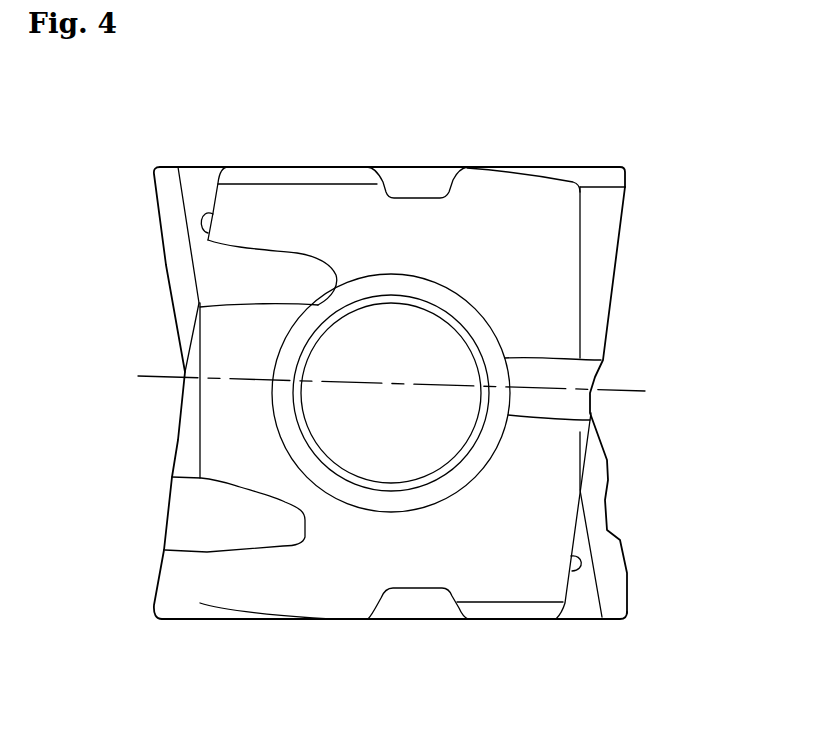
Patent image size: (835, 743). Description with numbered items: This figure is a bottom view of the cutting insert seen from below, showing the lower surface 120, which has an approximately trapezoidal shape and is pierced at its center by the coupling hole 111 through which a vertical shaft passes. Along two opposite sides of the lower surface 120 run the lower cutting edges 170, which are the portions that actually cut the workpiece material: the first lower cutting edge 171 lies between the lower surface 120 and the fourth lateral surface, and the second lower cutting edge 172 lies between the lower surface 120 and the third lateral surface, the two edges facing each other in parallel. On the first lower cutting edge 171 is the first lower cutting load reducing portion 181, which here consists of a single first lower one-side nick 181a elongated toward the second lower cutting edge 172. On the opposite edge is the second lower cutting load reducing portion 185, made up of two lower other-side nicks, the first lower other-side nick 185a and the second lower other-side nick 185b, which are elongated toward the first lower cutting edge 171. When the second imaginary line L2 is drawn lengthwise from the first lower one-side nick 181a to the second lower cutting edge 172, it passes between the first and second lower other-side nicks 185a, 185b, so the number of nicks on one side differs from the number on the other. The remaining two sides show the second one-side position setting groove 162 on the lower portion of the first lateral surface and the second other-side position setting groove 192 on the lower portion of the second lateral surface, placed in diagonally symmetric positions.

The coupling hole 111 is at (423, 335).
The lower surface 120 is at (528, 186).
The second one-side position setting groove 162 is at (418, 176).
The lower cutting edges 170 is at (400, 393).
The first lower cutting edge 171 is at (618, 243).
The second lower cutting edge 172 is at (182, 427).
The first lower cutting load reducing portion 181 is at (632, 401).
The first lower one-side nick 181a is at (570, 414).
The second lower cutting load reducing portion 185 is at (186, 377).
The first lower other-side nick 185a is at (237, 278).
The second lower other-side nick 185b is at (213, 523).
The second other-side position setting groove 192 is at (420, 602).
The second imaginary line L2 is at (157, 375).